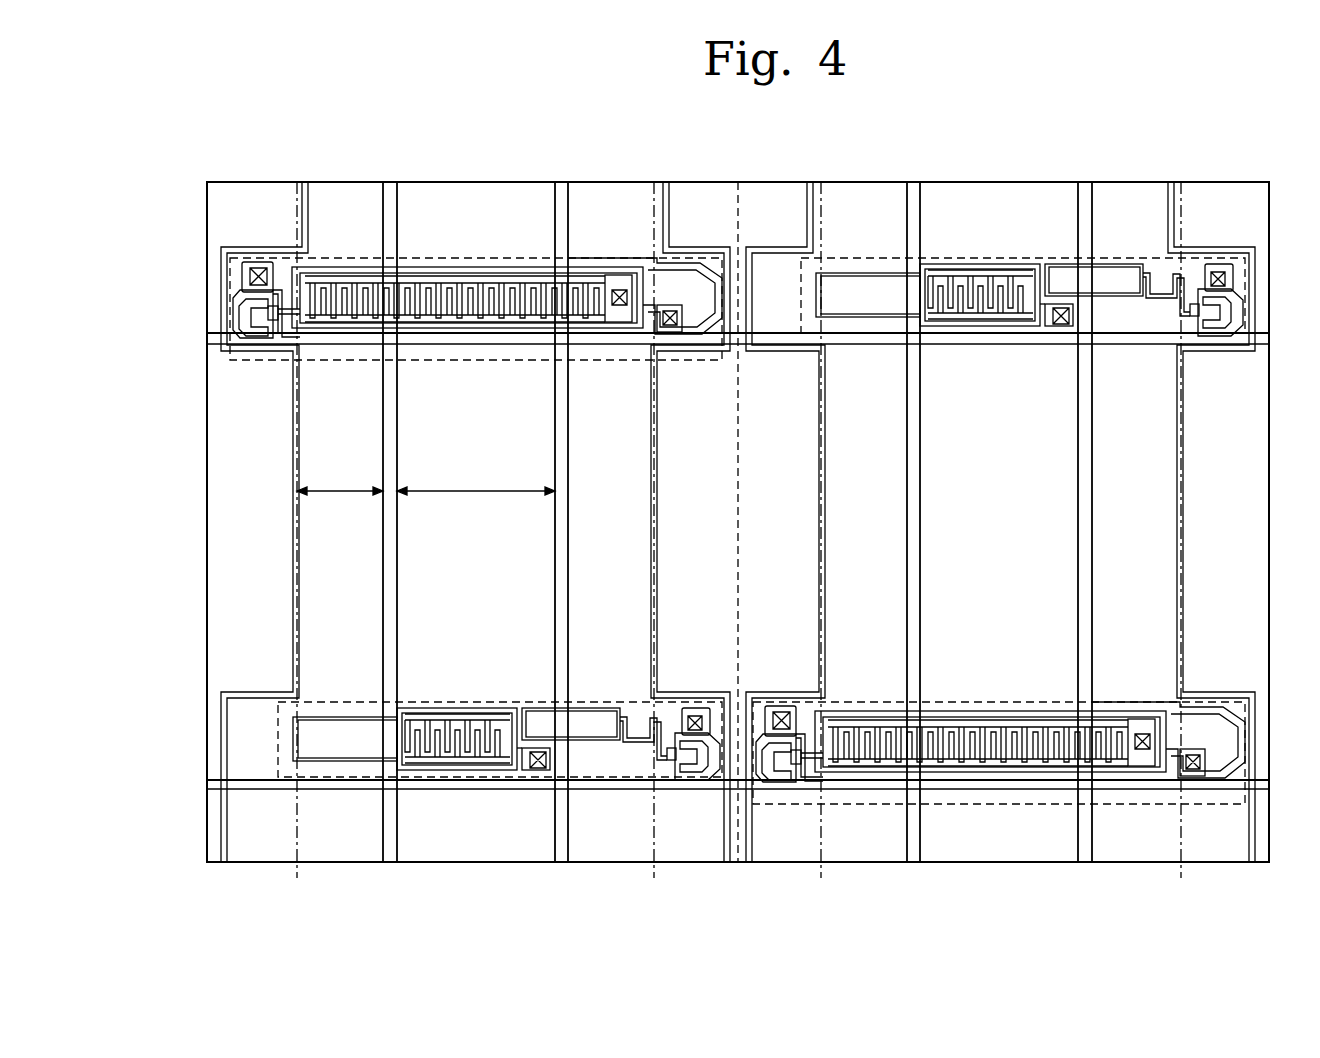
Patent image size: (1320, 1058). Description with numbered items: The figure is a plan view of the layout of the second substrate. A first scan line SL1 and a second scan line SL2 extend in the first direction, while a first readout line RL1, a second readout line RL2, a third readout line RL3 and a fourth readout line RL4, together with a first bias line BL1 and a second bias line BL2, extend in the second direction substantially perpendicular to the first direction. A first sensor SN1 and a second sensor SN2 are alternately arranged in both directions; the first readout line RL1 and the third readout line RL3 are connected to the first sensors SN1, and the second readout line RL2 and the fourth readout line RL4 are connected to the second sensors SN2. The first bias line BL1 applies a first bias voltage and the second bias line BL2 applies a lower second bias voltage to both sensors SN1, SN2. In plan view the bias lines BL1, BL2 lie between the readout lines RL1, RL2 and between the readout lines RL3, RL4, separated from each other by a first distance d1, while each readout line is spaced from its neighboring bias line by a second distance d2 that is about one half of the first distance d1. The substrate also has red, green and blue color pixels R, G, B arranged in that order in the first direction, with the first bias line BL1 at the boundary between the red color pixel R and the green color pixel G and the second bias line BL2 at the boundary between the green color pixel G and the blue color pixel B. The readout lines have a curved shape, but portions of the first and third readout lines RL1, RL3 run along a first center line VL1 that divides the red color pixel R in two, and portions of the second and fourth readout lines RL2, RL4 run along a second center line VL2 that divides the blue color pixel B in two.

The first readout line RL1 is at (302, 192).
The second readout line RL2 is at (663, 192).
The third readout line RL3 is at (807, 192).
The fourth readout line RL4 is at (1168, 192).
The first bias line BL1 is at (383, 192).
The second bias line BL2 is at (555, 192).
The first scan line SL1 is at (210, 350).
The second scan line SL2 is at (210, 794).
The first center line VL1 is at (557, 545).
The second center line VL2 is at (917, 545).
The first sensor SN1 is at (478, 365).
The second sensor SN2 is at (481, 700).
The first distance d1 is at (476, 480).
The second distance d2 is at (340, 480).
The red color pixel R is at (600, 551).
The green color pixel G is at (730, 551).
The blue color pixel B is at (867, 551).